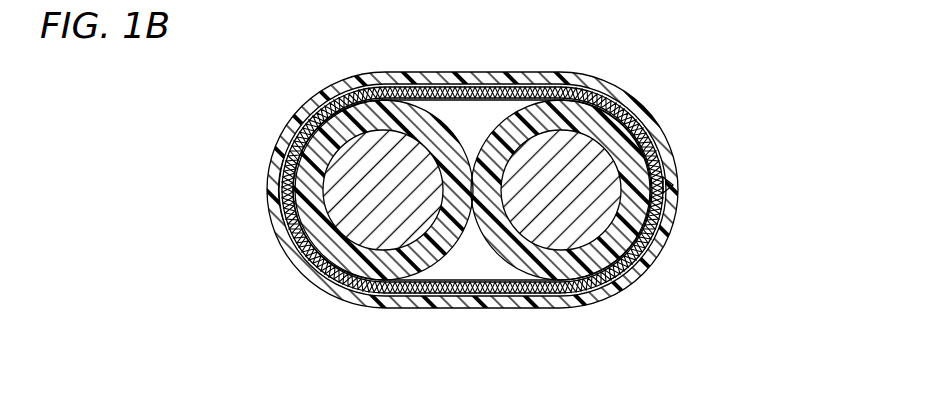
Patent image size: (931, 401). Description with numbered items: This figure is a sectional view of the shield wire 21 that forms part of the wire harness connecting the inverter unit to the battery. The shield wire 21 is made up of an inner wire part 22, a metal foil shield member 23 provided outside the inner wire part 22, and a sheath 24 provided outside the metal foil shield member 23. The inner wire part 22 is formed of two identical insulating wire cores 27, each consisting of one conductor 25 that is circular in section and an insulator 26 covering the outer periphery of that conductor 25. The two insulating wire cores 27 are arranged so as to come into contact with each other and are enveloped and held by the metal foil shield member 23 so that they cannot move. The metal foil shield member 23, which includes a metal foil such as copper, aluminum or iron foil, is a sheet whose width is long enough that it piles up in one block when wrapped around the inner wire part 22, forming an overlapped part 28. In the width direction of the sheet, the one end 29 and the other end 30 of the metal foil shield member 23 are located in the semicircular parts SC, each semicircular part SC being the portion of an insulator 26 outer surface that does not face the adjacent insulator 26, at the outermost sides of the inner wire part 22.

The shield wire 21 is at (253, 92).
The inner wire part 22 is at (512, 355).
The metal foil shield member 23 is at (291, 248).
The sheath 24 is at (650, 262).
The conductor 25 is at (372, 153).
The insulator 26 is at (413, 118).
The insulating wire core 27 is at (446, 268).
The overlapped part 28 is at (477, 88).
The one end 29 is at (280, 203).
The other end 30 is at (666, 190).
The semicircular part SC is at (290, 148).